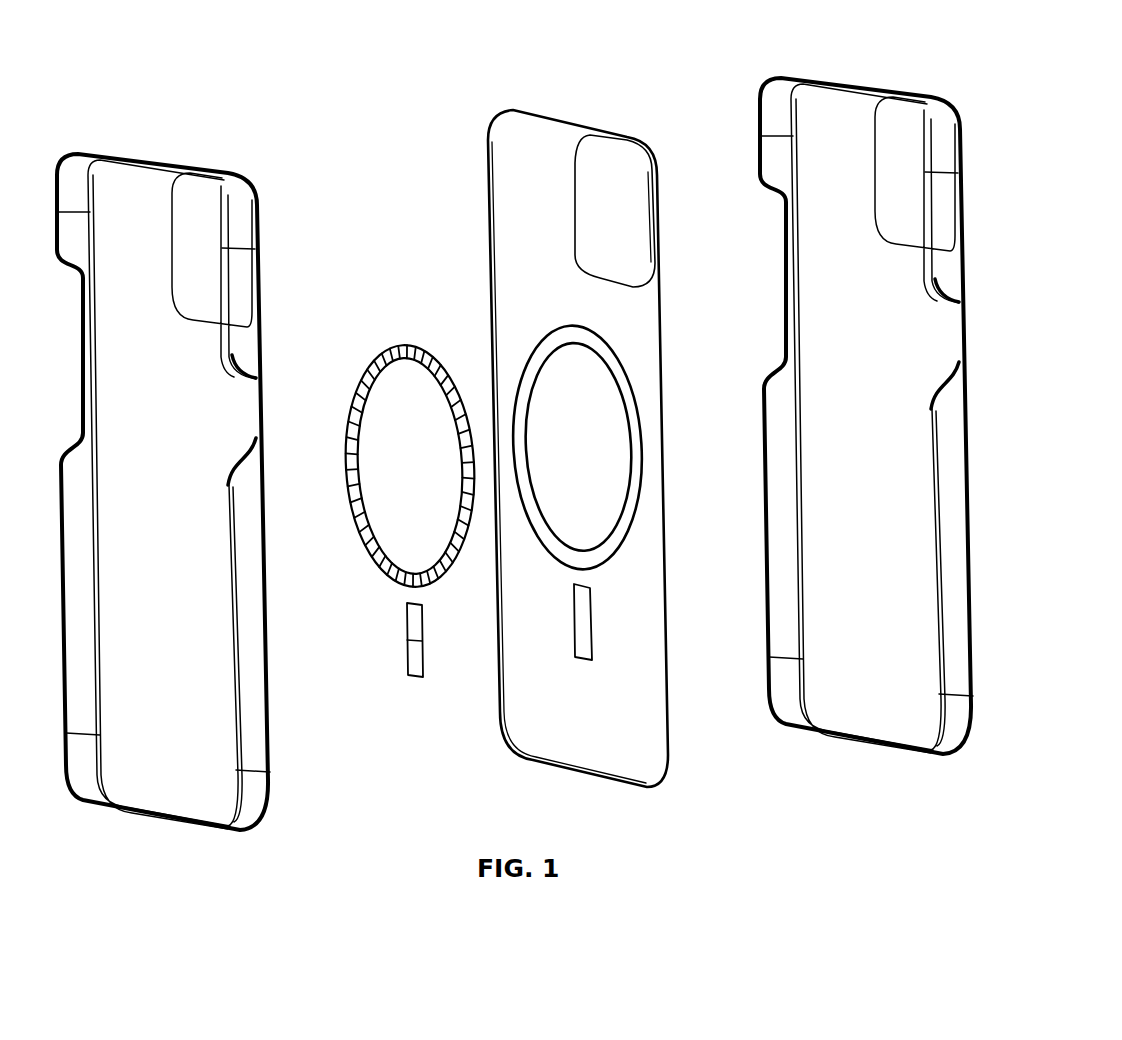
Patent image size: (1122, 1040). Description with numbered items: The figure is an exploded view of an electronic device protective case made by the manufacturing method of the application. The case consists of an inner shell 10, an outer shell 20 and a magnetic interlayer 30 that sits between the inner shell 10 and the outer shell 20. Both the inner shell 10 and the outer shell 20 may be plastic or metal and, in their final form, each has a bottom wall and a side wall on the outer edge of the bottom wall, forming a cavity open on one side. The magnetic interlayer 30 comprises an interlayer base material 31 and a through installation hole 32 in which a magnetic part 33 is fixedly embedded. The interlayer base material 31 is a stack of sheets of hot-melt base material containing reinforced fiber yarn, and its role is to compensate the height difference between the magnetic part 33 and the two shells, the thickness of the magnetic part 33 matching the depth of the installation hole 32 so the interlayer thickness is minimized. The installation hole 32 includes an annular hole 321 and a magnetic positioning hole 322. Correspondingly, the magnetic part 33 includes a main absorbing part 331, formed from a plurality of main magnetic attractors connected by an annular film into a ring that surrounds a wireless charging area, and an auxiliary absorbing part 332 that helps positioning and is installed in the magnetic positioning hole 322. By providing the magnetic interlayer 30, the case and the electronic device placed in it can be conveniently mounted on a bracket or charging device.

The inner shell 10 is at (145, 131).
The outer shell 20 is at (882, 62).
The magnetic interlayer 30 is at (677, 88).
The interlayer base material 31 is at (515, 230).
The installation hole 32 is at (713, 438).
The annular hole 321 is at (632, 412).
The magnetic positioning hole 322 is at (583, 612).
The magnetic part 33 is at (333, 602).
The main absorbing part 331 is at (366, 574).
The auxiliary absorbing part 332 is at (414, 657).